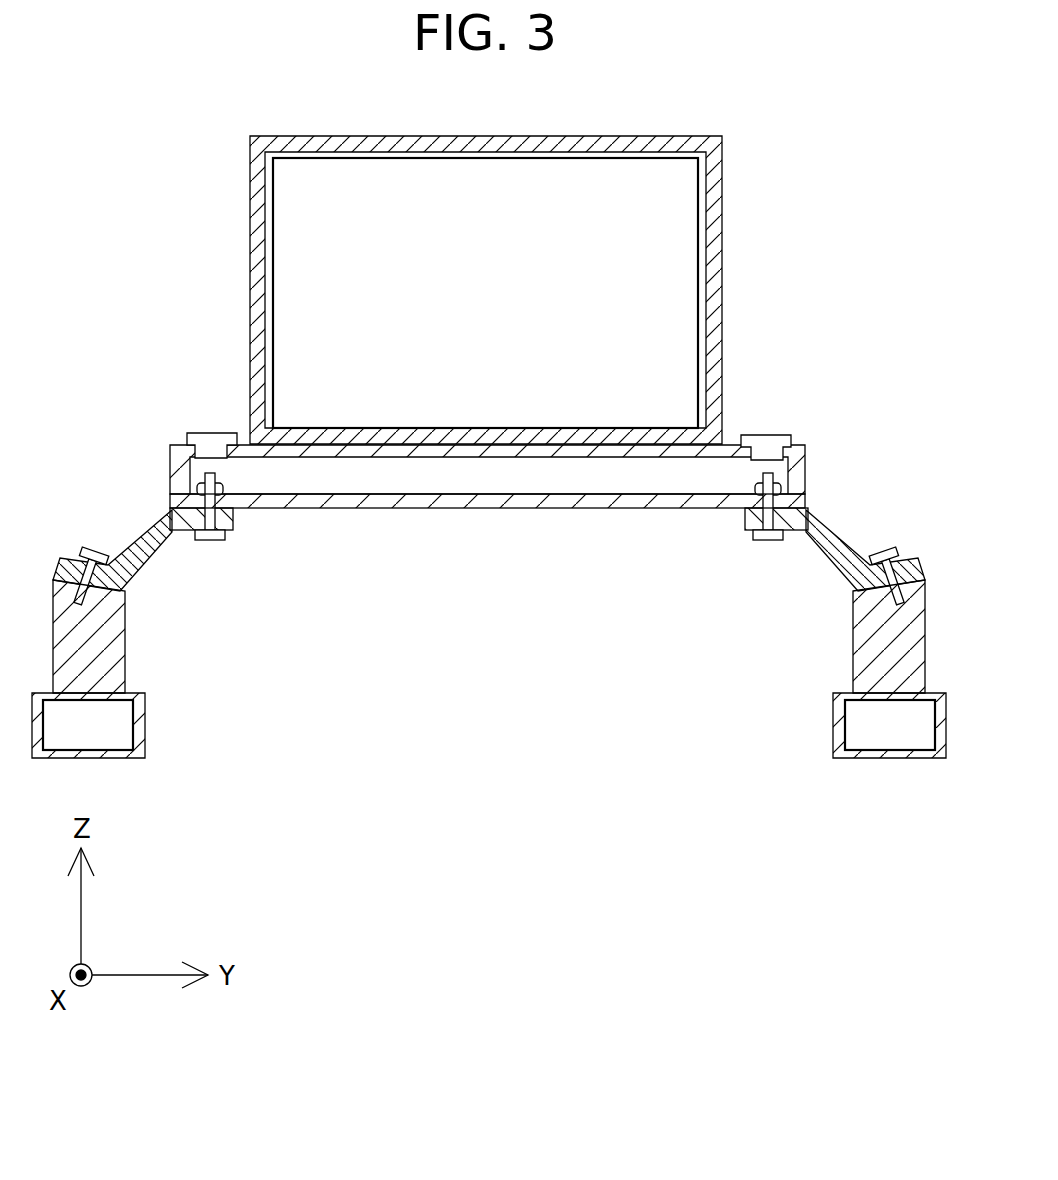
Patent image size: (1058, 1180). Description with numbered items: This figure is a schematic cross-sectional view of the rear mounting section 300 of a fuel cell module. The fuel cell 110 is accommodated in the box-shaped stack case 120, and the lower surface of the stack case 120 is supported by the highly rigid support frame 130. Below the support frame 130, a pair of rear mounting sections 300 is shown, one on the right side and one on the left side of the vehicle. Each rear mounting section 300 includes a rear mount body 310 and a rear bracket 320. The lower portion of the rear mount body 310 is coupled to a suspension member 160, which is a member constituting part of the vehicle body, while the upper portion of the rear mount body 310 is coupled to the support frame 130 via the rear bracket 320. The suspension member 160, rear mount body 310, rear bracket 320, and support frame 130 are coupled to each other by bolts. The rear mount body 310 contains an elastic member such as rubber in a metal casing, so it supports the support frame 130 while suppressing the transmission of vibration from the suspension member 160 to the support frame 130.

The fuel cell 110 is at (508, 309).
The stack case 120 is at (722, 186).
The support frame 130 is at (490, 508).
The suspension member 160 is at (145, 727).
The rear mounting section 300 is at (266, 617).
The rear mount body 310 is at (125, 650).
The rear bracket 320 is at (153, 557).